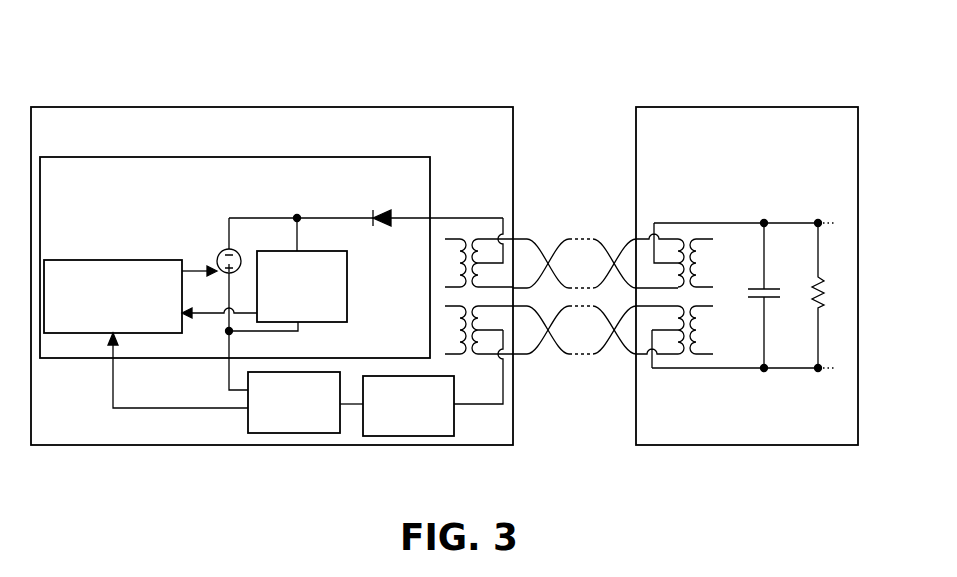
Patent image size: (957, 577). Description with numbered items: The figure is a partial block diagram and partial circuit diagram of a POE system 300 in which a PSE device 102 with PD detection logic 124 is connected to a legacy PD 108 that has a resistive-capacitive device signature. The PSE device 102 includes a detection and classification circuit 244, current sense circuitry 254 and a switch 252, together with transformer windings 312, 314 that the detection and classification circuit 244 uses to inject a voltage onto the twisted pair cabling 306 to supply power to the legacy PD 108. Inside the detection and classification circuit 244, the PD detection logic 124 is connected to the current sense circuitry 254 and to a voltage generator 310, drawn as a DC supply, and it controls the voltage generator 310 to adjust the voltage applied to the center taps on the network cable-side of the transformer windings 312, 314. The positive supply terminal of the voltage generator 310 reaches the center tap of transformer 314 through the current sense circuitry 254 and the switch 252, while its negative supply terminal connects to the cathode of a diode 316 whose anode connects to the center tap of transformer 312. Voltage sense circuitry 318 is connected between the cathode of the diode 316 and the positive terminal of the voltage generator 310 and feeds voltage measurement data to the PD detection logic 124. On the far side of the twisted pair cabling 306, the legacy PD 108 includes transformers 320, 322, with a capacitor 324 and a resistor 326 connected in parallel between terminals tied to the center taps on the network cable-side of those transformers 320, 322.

The POE system 300 is at (141, 36).
The PSE device 102 is at (152, 107).
The legacy PD 108 is at (752, 107).
The detection and classification circuit 244 is at (134, 157).
The PD detection logic 124 is at (85, 333).
The voltage generator 310 is at (250, 247).
The voltage sense circuitry 318 is at (329, 252).
The diode 316 is at (379, 211).
The transformer winding 312 is at (458, 259).
The transformer winding 314 is at (458, 325).
The twisted pair cabling 306 is at (588, 206).
The transformer 320 is at (700, 256).
The transformer 322 is at (700, 334).
The capacitor 324 is at (772, 300).
The resistor 326 is at (815, 280).
The current sense circuitry 254 is at (290, 433).
The switch 252 is at (411, 436).